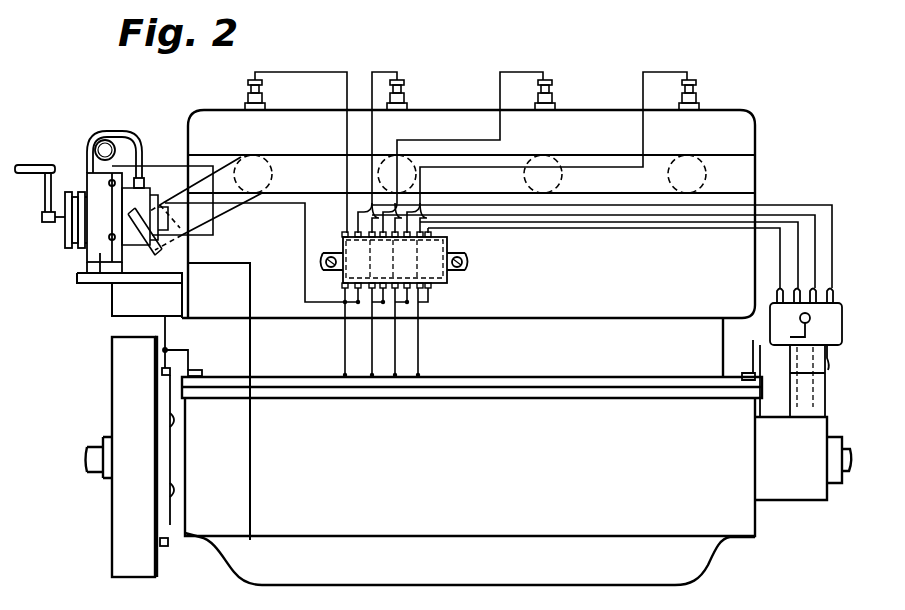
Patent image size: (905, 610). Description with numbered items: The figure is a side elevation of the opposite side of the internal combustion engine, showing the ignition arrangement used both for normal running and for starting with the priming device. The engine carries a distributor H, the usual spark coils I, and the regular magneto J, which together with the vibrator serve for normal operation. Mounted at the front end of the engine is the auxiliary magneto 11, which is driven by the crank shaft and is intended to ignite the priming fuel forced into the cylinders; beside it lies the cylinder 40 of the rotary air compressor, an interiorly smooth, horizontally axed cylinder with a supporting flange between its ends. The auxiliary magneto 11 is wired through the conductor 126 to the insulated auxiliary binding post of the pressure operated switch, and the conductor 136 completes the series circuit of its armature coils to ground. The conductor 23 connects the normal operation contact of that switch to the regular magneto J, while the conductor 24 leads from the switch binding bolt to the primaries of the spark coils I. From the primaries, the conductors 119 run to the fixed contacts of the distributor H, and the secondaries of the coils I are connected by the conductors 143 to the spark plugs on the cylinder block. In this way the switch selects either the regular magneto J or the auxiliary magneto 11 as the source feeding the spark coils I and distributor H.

The cylinder 40 is at (140, 203).
The conductor 126 is at (210, 184).
The conductors 143 is at (447, 138).
The conductor 24 is at (303, 223).
The spark coils I is at (448, 243).
The conductors 119 is at (702, 218).
The auxiliary magneto 11 is at (100, 252).
The conductor 136 is at (112, 303).
The conductor 23 is at (258, 273).
The magneto J is at (163, 527).
The distributor H is at (827, 372).